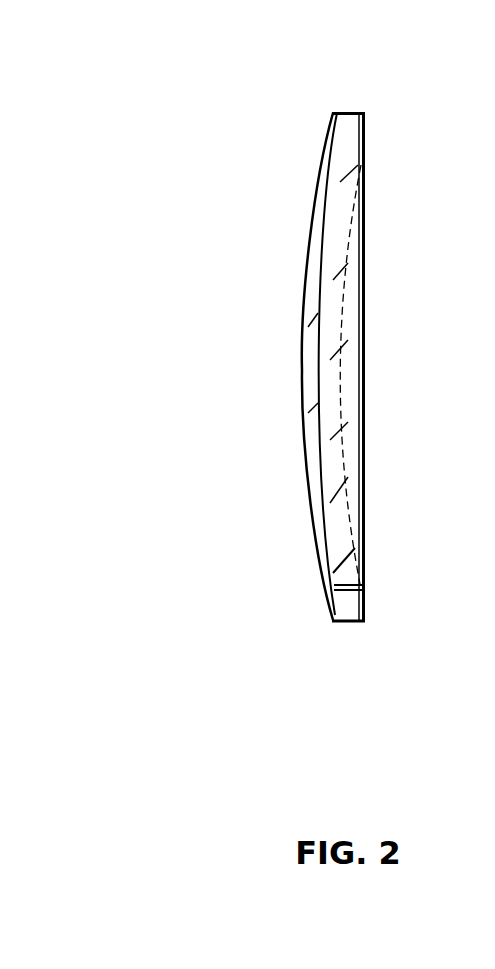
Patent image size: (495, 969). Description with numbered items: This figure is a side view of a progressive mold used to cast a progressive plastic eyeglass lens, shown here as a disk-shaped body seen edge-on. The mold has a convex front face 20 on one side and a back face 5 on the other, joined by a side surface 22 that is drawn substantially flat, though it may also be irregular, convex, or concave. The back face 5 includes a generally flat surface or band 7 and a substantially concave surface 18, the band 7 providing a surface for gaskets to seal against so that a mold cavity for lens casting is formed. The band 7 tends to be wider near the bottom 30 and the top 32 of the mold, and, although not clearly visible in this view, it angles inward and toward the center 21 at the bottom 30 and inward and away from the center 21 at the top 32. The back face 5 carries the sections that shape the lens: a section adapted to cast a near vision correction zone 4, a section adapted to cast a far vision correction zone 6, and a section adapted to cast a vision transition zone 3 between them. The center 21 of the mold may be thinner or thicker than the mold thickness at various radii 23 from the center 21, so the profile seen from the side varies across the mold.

The vision transition zone section 3 is at (360, 400).
The near vision correction zone section 4 is at (365, 493).
The back face 5 is at (368, 330).
The far vision correction zone section 6 is at (367, 277).
The band 7 is at (377, 145).
The concave surface 18 is at (350, 237).
The convex front face 20 is at (308, 486).
The center 21 is at (305, 370).
The side surface 22 is at (364, 637).
The radii 23 is at (318, 162).
The bottom 30 is at (348, 680).
The top 32 is at (341, 110).